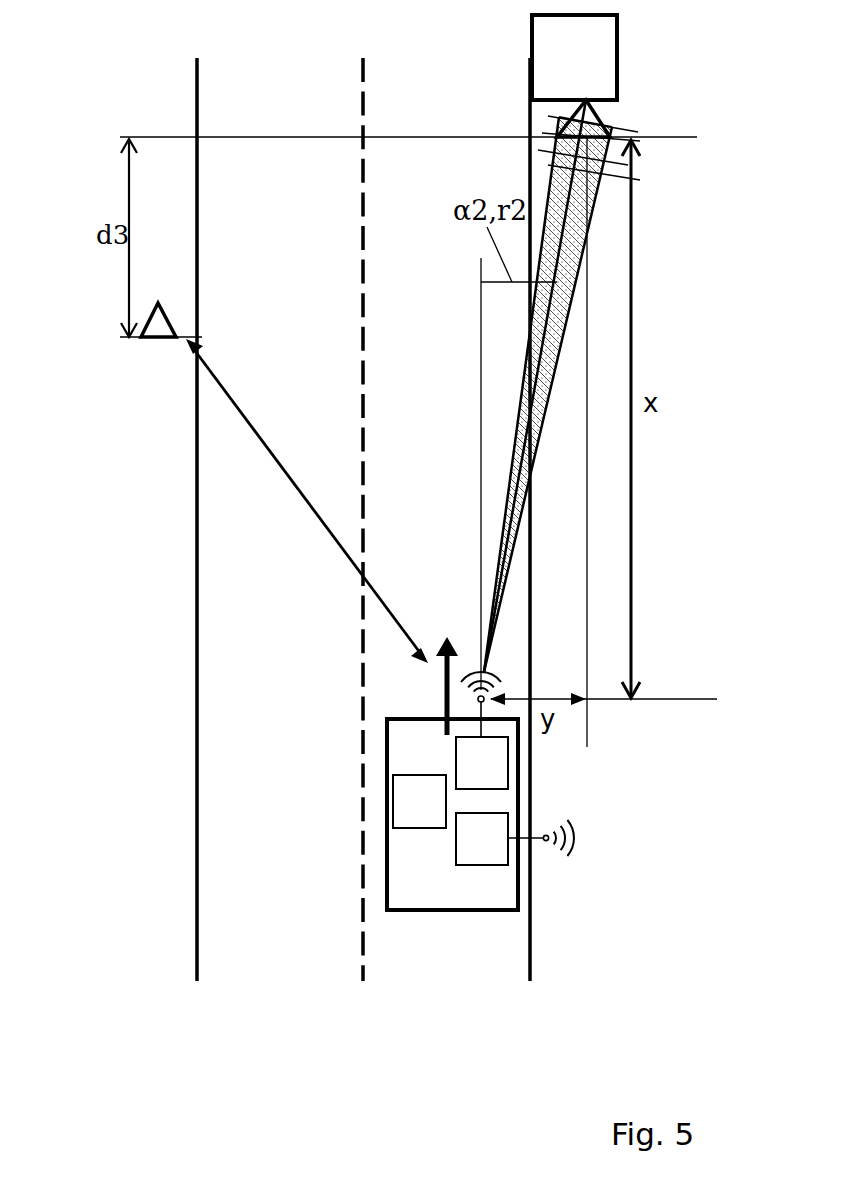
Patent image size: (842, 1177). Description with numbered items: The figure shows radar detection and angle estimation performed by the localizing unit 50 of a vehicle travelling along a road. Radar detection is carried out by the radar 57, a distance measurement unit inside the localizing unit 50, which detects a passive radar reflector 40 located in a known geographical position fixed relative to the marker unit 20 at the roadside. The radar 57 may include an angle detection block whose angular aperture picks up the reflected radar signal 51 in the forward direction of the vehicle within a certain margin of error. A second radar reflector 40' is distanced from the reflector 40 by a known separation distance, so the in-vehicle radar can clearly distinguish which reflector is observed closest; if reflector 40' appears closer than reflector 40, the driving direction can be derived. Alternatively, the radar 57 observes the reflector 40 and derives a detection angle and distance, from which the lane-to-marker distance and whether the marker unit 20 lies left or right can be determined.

The marker unit 20 is at (574, 57).
The passive radar reflector 40 is at (642, 105).
The radar reflector 40' is at (136, 365).
The reflected radar signal 51 is at (542, 330).
The localizing unit 50 is at (480, 814).
The radar 57 is at (482, 730).